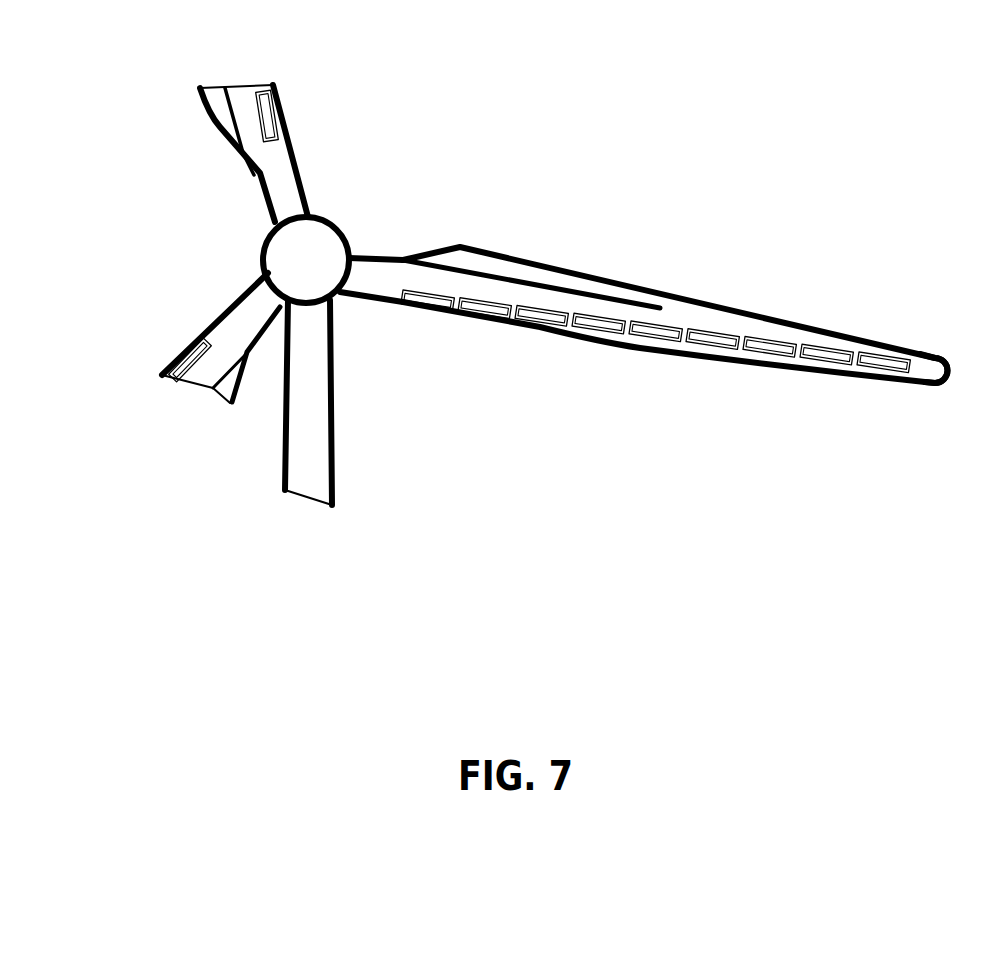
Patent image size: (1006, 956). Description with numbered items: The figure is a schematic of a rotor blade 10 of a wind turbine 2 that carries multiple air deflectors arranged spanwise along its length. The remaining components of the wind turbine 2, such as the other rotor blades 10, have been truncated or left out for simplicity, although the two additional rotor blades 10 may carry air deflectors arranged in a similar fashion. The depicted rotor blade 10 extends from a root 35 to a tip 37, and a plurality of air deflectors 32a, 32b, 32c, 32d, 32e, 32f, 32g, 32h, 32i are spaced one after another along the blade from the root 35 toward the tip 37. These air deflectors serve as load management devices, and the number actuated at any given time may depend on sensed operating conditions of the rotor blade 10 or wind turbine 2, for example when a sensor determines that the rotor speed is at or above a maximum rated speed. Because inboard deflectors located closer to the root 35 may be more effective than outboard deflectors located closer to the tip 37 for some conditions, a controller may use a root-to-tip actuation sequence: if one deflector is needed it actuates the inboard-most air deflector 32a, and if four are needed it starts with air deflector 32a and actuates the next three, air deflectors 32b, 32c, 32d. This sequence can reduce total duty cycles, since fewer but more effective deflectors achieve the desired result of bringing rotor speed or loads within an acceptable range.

The wind turbine 2 is at (187, 468).
The rotor blade 10 is at (174, 126).
The root 35 is at (365, 273).
The tip 37 is at (948, 357).
The air deflector 32a is at (432, 317).
The air deflector 32b is at (492, 313).
The air deflector 32c is at (550, 320).
The air deflector 32d is at (607, 327).
The air deflector 32e is at (657, 333).
The air deflector 32f is at (712, 350).
The air deflector 32g is at (770, 352).
The air deflector 32h is at (837, 355).
The air deflector 32i is at (893, 362).